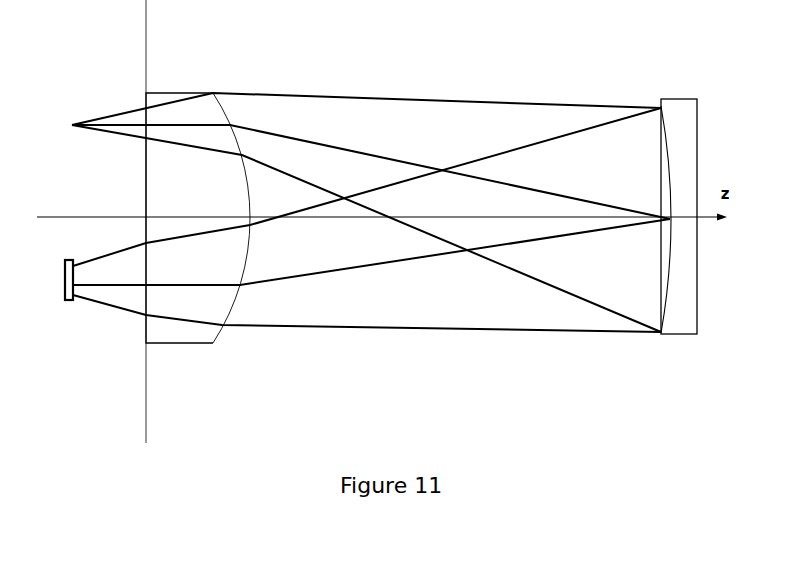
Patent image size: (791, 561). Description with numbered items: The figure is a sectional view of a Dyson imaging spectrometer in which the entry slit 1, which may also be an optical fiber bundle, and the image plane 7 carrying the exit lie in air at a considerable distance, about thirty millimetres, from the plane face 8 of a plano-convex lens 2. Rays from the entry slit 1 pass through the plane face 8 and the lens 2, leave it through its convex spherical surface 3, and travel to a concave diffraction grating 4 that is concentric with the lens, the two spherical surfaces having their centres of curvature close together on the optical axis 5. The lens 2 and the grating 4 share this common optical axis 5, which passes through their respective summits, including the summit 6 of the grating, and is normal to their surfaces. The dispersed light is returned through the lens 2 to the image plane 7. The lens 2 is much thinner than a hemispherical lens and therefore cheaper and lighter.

The entry slit 1 is at (72, 119).
The plano-convex lens 2 is at (183, 180).
The spherical surface of the lens 3 is at (229, 110).
The concave diffraction grating 4 is at (668, 145).
The optical axis 5 is at (708, 219).
The summit of the grating 6 is at (670, 232).
The image plane 7 is at (65, 275).
The plane face of the lens 8 is at (146, 162).